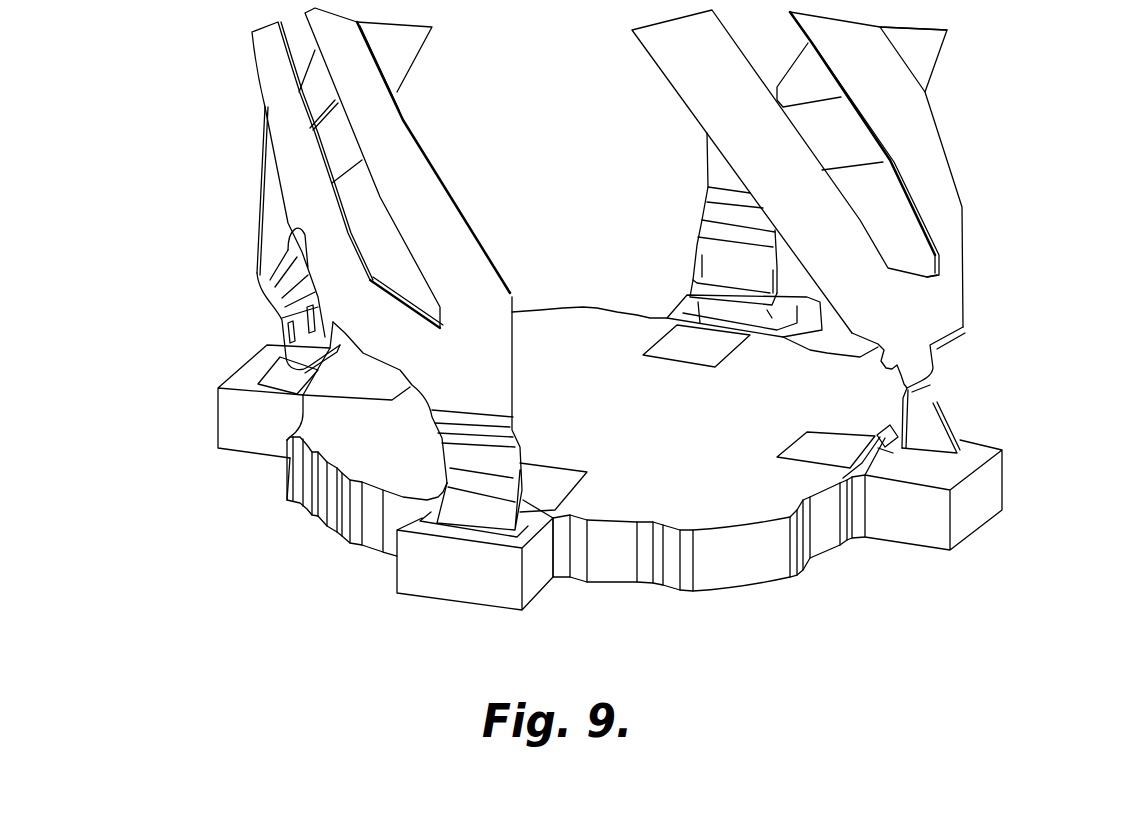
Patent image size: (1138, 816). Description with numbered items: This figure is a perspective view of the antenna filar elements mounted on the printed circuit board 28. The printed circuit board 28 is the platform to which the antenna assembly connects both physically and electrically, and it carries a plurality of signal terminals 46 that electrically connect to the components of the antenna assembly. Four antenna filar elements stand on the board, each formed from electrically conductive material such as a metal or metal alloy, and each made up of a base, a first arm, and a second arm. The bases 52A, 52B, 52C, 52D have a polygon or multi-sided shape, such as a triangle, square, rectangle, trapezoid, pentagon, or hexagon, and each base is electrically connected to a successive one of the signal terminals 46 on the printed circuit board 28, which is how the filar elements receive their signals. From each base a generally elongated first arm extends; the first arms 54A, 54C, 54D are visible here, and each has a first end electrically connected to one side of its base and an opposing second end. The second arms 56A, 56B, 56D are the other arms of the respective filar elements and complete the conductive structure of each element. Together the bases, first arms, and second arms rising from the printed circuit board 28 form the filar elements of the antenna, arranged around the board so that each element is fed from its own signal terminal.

The printed circuit board 28 is at (772, 598).
The signal terminals 46 is at (793, 443).
The base 52A is at (480, 408).
The base 52B is at (277, 280).
The base 52C is at (727, 222).
The base 52D is at (942, 365).
The first arm 54A is at (400, 338).
The first arm 54C is at (923, 50).
The first arm 54D is at (840, 257).
The second arm 56A is at (412, 203).
The second arm 56B is at (268, 148).
The second arm 56D is at (938, 203).